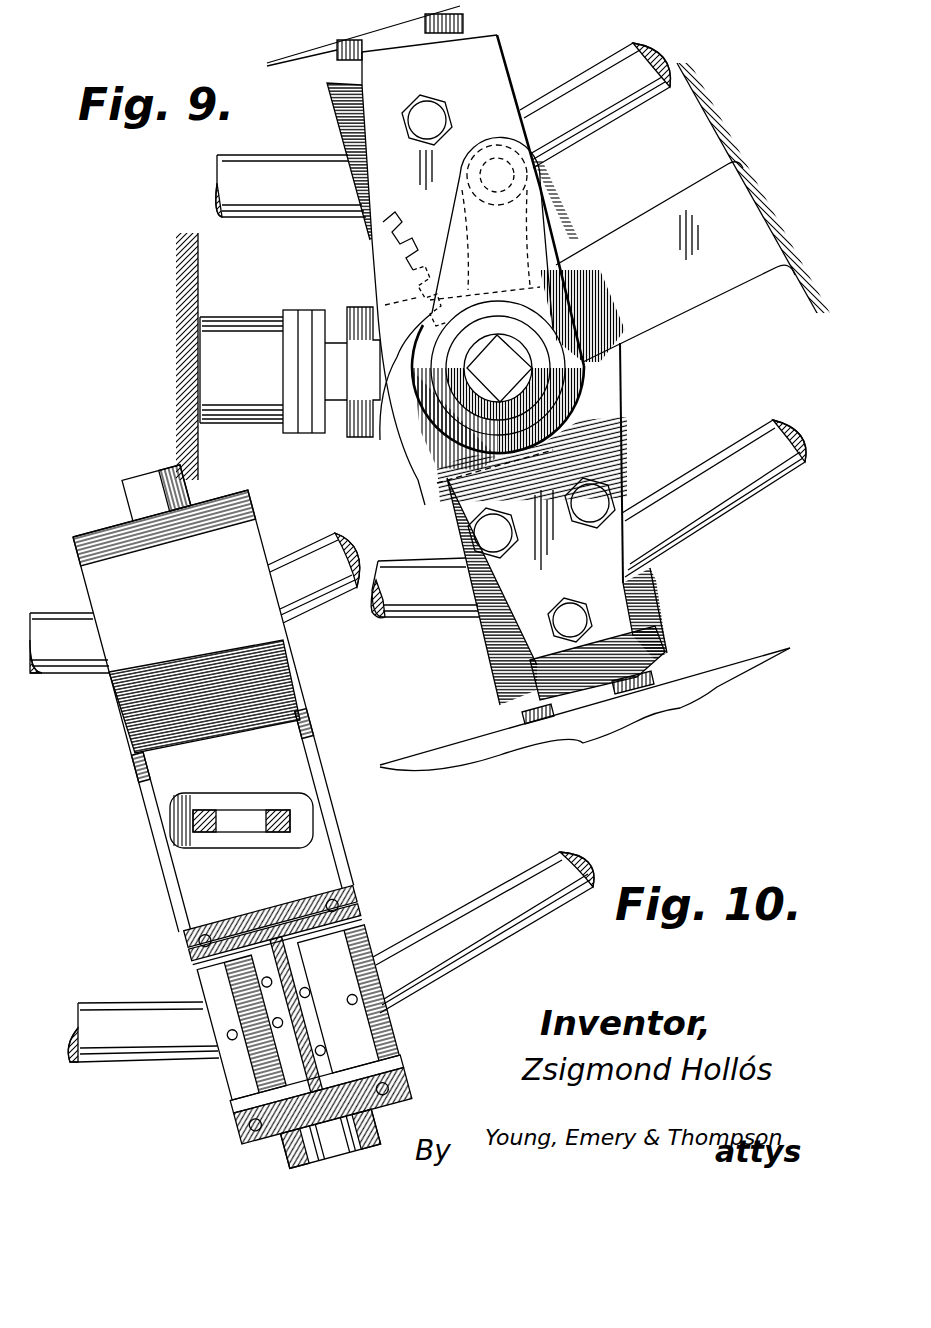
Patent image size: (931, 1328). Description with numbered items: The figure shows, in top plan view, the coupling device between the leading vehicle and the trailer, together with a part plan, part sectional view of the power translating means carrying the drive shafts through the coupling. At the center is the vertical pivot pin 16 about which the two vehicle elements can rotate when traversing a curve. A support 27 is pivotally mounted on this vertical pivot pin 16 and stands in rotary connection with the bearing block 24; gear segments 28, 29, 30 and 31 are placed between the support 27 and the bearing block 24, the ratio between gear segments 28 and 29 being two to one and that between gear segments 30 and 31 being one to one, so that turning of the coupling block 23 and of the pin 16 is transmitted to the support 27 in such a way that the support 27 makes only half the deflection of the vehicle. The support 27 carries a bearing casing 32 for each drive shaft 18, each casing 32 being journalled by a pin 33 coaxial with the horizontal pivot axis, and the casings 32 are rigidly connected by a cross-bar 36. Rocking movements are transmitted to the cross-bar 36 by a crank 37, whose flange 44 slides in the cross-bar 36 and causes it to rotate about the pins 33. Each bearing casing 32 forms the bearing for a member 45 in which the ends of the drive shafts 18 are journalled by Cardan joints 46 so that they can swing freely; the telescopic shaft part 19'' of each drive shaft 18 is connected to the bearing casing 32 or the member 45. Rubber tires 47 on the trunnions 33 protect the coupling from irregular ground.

In FIG. 9, the vertical pivot pin 16 is at (480, 380).
In FIG. 9, the drive shaft 18 is at (643, 70).
In FIG. 10, the drive shaft 18 is at (35, 618).
In FIG. 9, the telescopic shaft part 19'' is at (512, 350).
In FIG. 10, the telescopic shaft part 19'' is at (311, 797).
In FIG. 9, the coupling block 23 is at (282, 425).
In FIG. 9, the bearing block 24 is at (652, 322).
In FIG. 9, the support 27 is at (615, 407).
In FIG. 9, the gear segment 28 is at (400, 284).
In FIG. 9, the gear segment 29 is at (400, 207).
In FIG. 9, the gear segment 30 is at (397, 357).
In FIG. 9, the gear segment 31 is at (393, 236).
In FIG. 9, the bearing casing 32 is at (499, 38).
In FIG. 10, the bearing casing 32 is at (262, 623).
In FIG. 10, the pin 33 is at (372, 1127).
In FIG. 10, the cross-bar 36 is at (318, 785).
In FIG. 10, the crank 37 is at (205, 838).
In FIG. 10, the flange 44 is at (191, 796).
In FIG. 10, the coupling member 45 is at (362, 912).
In FIG. 10, the Cardan joint 46 is at (380, 1036).
In FIG. 9, the rubber tire 47 is at (648, 722).